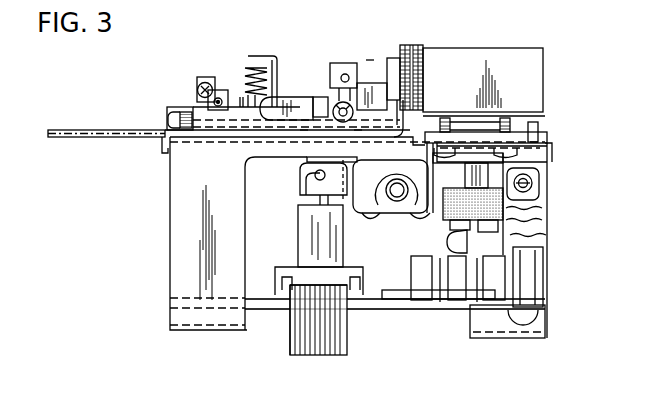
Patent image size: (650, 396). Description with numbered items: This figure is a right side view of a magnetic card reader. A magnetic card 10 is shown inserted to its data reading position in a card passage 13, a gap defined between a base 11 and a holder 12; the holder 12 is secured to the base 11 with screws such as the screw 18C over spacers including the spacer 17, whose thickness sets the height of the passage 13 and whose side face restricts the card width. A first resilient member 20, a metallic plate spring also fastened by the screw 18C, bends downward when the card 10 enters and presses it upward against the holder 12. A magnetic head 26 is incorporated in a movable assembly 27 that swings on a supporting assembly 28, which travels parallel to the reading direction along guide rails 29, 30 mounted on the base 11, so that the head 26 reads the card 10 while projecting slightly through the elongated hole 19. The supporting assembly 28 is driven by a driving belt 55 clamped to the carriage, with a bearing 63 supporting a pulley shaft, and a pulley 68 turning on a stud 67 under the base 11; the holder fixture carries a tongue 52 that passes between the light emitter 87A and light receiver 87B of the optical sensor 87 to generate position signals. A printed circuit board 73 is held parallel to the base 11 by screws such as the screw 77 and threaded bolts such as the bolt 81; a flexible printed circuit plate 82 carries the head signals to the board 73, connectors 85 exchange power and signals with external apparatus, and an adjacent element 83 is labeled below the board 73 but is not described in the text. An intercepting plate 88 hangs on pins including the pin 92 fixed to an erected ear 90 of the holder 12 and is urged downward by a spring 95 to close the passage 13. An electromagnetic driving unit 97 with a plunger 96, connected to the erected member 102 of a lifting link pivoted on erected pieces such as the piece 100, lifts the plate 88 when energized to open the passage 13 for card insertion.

The magnetic card 10 is at (80, 130).
The base 11 is at (172, 203).
The holder 12 is at (166, 116).
The card passage 13 is at (163, 140).
The spacer 17 is at (184, 140).
The screw 18C is at (415, 137).
The elongated hole 19 is at (308, 137).
The first resilient member 20 is at (400, 50).
The magnetic head 26 is at (301, 157).
The movable assembly 27 is at (295, 189).
The supporting assembly 28 is at (382, 263).
The guide rail 29 is at (397, 205).
The guide rail 30 is at (528, 185).
The tongue 52 is at (463, 285).
The driving belt 55 is at (542, 208).
The bearing 63 is at (524, 138).
The stud 67 is at (474, 228).
The pulley 68 is at (545, 235).
The printed circuit board 73 is at (256, 310).
The screw 77 is at (540, 320).
The threaded bolt 81 is at (544, 278).
The flexible printed circuit plate 82 is at (300, 242).
The bobbin flange 83 is at (285, 297).
The connectors 85 is at (328, 348).
The optical sensor 87 is at (428, 300).
The light emitter 87A is at (415, 283).
The light receiver 87B is at (472, 312).
The intercepting plate 88 is at (260, 56).
The erected ear 90 is at (280, 97).
The pin 92 is at (243, 102).
The spring 95 is at (247, 68).
The plunger 96 is at (370, 58).
The electromagnetic driving unit 97 is at (457, 48).
The erected piece 100 is at (358, 133).
The erected member 102 is at (303, 133).